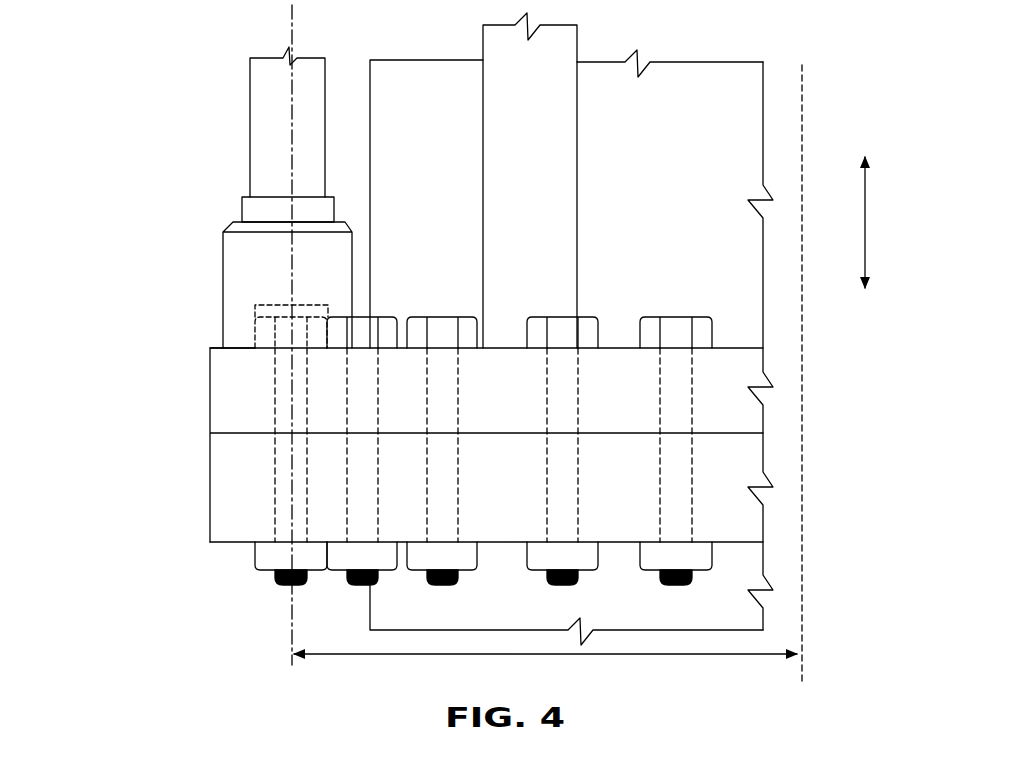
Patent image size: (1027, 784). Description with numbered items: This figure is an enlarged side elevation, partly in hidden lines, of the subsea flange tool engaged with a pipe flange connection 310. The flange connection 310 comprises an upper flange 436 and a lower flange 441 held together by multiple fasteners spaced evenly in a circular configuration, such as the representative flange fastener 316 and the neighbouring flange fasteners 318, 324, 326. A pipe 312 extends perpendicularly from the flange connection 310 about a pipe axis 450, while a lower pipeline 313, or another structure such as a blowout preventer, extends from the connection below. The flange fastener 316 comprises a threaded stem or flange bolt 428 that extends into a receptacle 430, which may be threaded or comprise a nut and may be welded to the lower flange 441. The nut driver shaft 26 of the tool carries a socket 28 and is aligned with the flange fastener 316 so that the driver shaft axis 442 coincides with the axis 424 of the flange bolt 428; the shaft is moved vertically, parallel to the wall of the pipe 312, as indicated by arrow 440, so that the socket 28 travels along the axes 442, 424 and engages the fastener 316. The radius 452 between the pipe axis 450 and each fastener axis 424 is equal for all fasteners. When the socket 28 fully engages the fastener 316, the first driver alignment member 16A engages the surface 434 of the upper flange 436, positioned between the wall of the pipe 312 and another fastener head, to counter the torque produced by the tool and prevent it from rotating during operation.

The first driver alignment member 16A is at (565, 50).
The nut driver shaft 26 is at (257, 115).
The socket 28 is at (222, 250).
The flange connection 310 is at (116, 440).
The pipe 312 is at (437, 90).
The lower pipeline 313 is at (385, 608).
The flange fastener 316 is at (270, 305).
The flange fastener 318 is at (382, 318).
The flange fastener 324 is at (453, 318).
The flange fastener 326 is at (578, 318).
The axis of flange bolt 424 is at (290, 448).
The flange bolt 428 is at (285, 530).
The receptacle 430 is at (275, 500).
The surface of upper flange 434 is at (213, 346).
The upper flange 436 is at (210, 403).
The arrow 440 is at (866, 236).
The lower flange 441 is at (210, 480).
The driver shaft axis 442 is at (289, 33).
The pipe axis 450 is at (802, 116).
The radius 452 is at (540, 656).